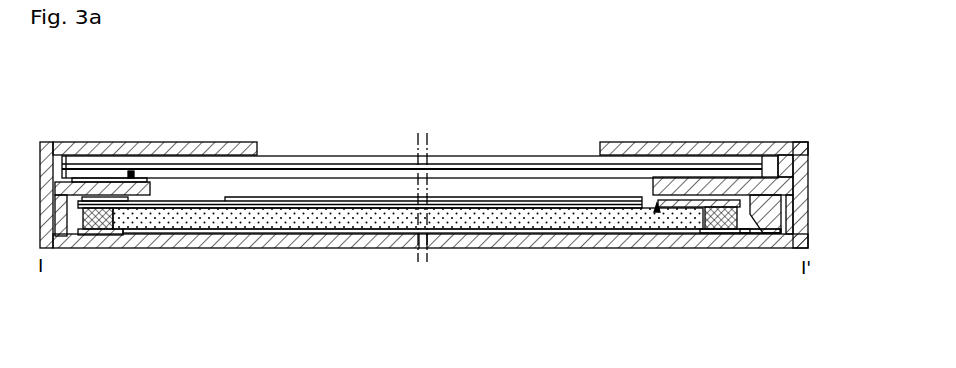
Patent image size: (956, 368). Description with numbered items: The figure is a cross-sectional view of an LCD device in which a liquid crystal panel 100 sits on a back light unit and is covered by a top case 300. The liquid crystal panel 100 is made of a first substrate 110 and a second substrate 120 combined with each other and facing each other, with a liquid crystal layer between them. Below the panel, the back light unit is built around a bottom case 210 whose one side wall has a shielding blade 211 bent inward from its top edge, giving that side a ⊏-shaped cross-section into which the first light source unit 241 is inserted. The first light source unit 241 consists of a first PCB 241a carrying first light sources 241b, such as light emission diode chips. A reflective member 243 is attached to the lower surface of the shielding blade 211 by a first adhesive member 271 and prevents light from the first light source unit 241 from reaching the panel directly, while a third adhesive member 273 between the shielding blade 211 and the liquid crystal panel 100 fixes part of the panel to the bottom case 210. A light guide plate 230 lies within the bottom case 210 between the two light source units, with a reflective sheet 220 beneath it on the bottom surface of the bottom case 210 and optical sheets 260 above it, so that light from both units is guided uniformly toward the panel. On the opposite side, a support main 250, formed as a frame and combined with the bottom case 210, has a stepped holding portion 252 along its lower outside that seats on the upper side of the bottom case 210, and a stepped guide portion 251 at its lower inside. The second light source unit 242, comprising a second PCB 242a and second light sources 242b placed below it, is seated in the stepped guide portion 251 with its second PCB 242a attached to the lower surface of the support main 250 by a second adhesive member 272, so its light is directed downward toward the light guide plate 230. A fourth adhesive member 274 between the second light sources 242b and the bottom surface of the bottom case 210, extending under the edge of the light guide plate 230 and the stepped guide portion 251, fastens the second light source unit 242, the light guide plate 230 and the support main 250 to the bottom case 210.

The liquid crystal panel 100 is at (262, 98).
The first substrate 110 is at (243, 170).
The second substrate 120 is at (186, 156).
The bottom case 210 is at (345, 245).
The shielding blade 211 is at (132, 171).
The reflective sheet 220 is at (492, 235).
The light guide plate 230 is at (293, 227).
The first light source unit 241 is at (167, 292).
The first PCB 241a is at (141, 235).
The first light sources 241b is at (96, 229).
The second light source unit 242 is at (752, 294).
The second PCB 242a is at (735, 233).
The second light sources 242b is at (708, 228).
The reflective member 243 is at (204, 208).
The support main 250 is at (782, 145).
The stepped guide portion 251 is at (657, 212).
The stepped holding portion 252 is at (809, 213).
The optical sheets 260 is at (512, 190).
The first adhesive member 271 is at (60, 142).
The second adhesive member 272 is at (708, 190).
The third adhesive member 273 is at (102, 183).
The fourth adhesive member 274 is at (768, 234).
The top case 300 is at (661, 146).